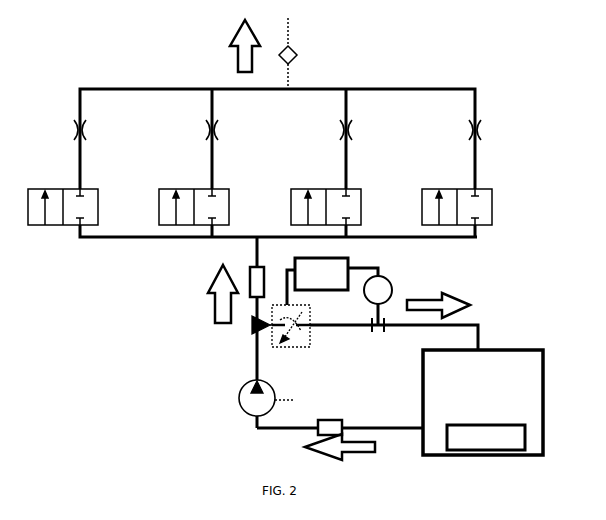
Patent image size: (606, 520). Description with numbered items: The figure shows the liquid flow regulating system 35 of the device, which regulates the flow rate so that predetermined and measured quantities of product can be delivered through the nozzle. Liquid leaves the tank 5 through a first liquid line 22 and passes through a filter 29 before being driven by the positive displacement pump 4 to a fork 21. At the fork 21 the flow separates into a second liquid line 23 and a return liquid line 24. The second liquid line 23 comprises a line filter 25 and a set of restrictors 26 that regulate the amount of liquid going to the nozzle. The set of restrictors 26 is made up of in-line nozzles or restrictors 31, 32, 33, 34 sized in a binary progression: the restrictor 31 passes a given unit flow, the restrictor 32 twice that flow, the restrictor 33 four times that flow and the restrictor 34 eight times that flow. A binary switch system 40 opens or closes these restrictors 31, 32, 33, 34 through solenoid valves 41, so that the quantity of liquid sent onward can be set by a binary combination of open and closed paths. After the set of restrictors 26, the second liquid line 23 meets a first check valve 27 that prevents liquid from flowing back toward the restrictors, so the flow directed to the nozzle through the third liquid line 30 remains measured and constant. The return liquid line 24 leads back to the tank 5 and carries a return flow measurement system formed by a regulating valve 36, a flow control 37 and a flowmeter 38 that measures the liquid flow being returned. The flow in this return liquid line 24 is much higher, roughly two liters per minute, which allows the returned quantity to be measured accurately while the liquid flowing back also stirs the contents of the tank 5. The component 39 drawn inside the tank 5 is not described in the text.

The positive displacement pump 4 is at (240, 392).
The tank 5 is at (483, 402).
The fork 21 is at (254, 330).
The first liquid line 22 is at (390, 432).
The second liquid line 23 is at (256, 311).
The return liquid line 24 is at (482, 327).
The line filter 25 is at (249, 270).
The set of restrictors 26 is at (536, 96).
The first check valve 27 is at (298, 54).
The filter 29 is at (316, 434).
The third liquid line 30 is at (291, 31).
The 1×F restrictor 31 is at (86, 131).
The 2×F restrictor 32 is at (218, 131).
The 4×F restrictor 33 is at (352, 131).
The 8×F restrictor 34 is at (481, 131).
The flow regulating system 35 is at (124, 72).
The regulating valve 36 is at (306, 340).
The flow control 37 is at (317, 281).
The flowmeter 38 is at (391, 283).
The level sensor 39 is at (486, 437).
The binary switch system 40 is at (538, 180).
The solenoid valves 41 is at (98, 200).